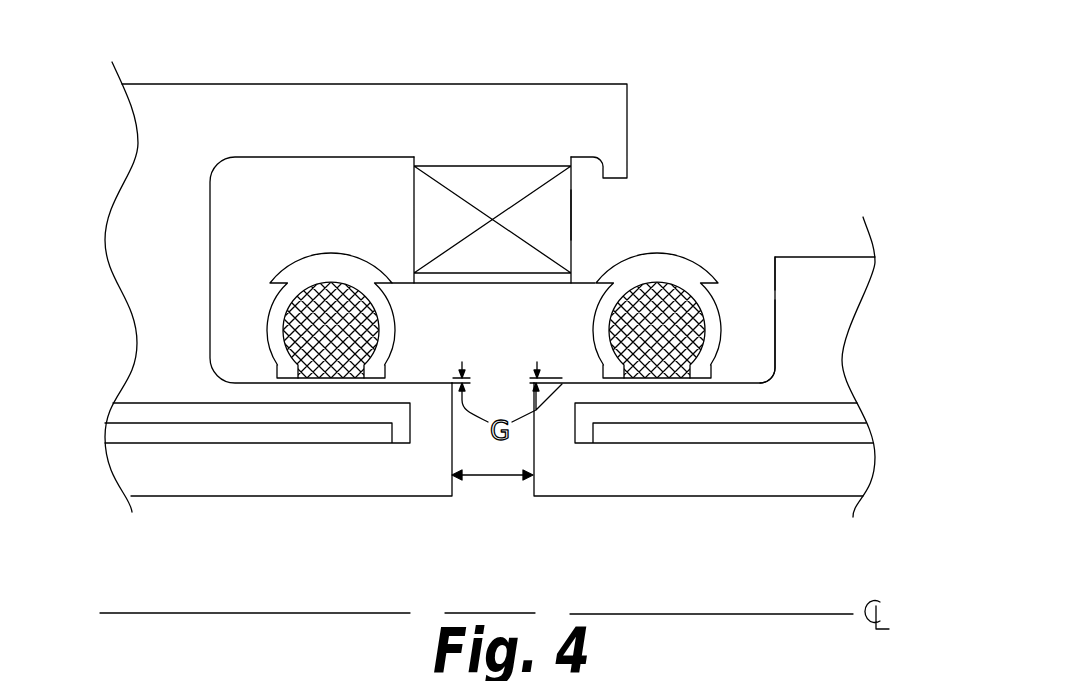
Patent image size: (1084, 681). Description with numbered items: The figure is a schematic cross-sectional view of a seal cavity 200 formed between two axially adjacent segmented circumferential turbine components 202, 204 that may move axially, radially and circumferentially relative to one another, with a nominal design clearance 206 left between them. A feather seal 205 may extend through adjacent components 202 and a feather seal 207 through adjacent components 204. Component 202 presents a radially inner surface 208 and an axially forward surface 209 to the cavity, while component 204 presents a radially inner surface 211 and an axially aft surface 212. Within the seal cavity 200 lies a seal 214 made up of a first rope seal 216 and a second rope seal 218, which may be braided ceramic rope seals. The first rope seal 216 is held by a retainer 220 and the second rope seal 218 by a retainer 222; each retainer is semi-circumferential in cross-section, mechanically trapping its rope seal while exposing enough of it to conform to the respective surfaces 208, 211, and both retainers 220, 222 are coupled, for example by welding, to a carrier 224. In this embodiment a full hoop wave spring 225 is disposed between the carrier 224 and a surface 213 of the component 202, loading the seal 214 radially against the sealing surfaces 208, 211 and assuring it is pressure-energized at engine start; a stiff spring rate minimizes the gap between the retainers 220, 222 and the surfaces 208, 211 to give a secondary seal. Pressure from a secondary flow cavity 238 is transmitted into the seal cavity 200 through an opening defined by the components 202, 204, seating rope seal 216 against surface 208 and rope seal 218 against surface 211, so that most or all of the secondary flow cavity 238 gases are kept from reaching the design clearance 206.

The seal cavity 200 is at (783, 101).
The turbine component 202 is at (332, 494).
The turbine component 204 is at (728, 496).
The feather seal 205 is at (187, 435).
The nominal design clearance 206 is at (495, 476).
The feather seal 207 is at (623, 435).
The radially inner surface 208 is at (211, 313).
The axially forward surface 209 is at (210, 272).
The radially inner surface 211 is at (736, 382).
The axially aft surface 212 is at (775, 278).
The surface 213 is at (347, 158).
The seal 214 is at (655, 230).
The first rope seal 216 is at (355, 318).
The second rope seal 218 is at (628, 312).
The retainer 220 is at (393, 346).
The retainer 222 is at (590, 334).
The carrier 224 is at (402, 280).
The full hoop wave spring 225 is at (571, 213).
The secondary flow cavity 238 is at (636, 70).